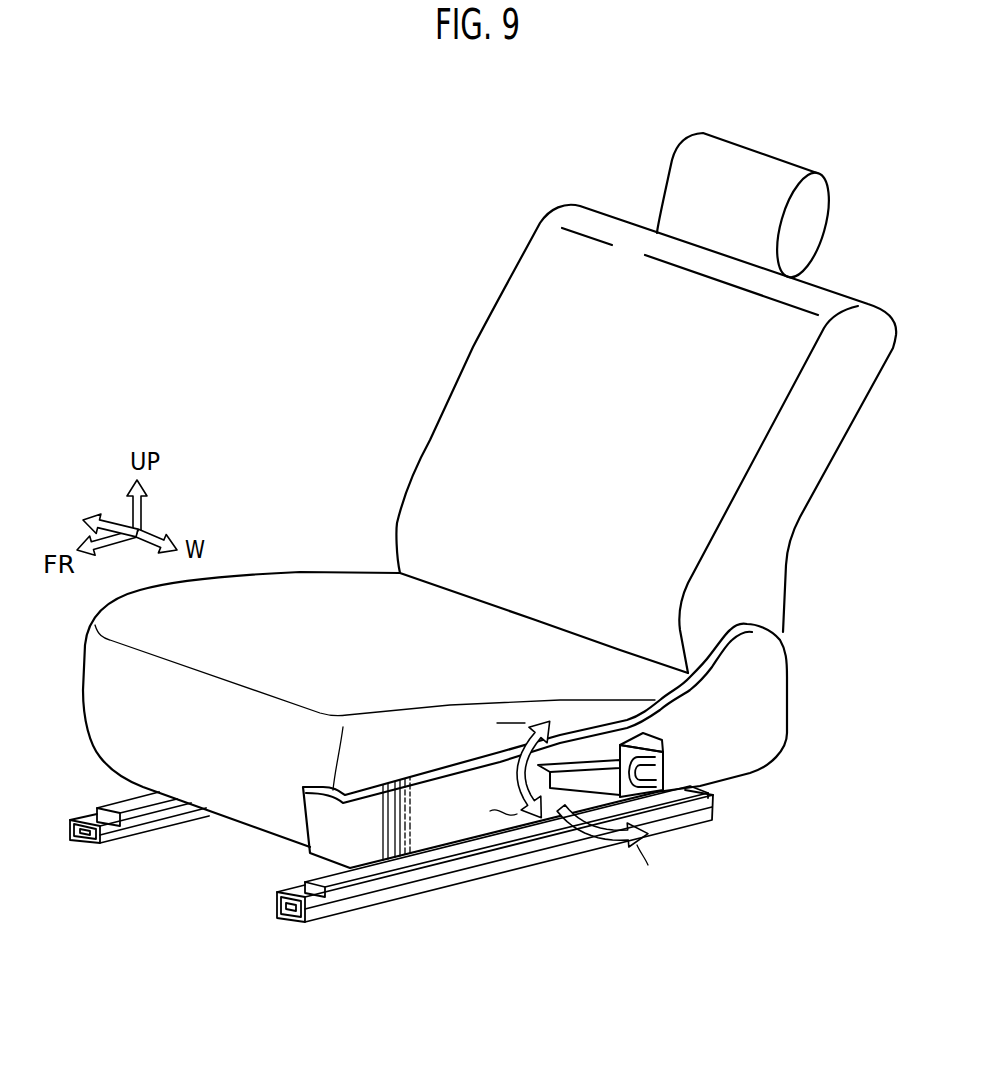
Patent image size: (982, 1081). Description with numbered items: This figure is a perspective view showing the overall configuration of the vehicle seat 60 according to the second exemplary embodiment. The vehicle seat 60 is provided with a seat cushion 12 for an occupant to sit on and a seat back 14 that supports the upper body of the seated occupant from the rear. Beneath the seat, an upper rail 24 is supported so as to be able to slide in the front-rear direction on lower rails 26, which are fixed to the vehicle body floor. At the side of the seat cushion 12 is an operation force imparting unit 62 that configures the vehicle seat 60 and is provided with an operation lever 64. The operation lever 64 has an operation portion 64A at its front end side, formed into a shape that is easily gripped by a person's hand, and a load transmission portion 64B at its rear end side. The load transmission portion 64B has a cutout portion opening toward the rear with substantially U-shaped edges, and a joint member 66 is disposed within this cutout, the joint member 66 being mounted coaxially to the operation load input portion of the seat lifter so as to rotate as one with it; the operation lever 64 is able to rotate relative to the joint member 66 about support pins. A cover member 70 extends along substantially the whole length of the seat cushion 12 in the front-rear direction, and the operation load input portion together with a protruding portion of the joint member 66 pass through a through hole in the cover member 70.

The vehicle seat 60 is at (523, 118).
The seat cushion 12 is at (292, 598).
The seat back 14 is at (490, 367).
The upper rail 24 is at (132, 812).
The lower rails 26 is at (183, 817).
The operation force imparting unit 62 is at (673, 762).
The operation lever 64 is at (457, 610).
The operation portion 64A is at (577, 762).
The load transmission portion 64B is at (625, 760).
The joint member 66 is at (660, 757).
The cover member 70 is at (500, 822).